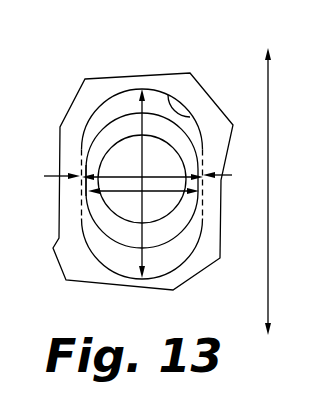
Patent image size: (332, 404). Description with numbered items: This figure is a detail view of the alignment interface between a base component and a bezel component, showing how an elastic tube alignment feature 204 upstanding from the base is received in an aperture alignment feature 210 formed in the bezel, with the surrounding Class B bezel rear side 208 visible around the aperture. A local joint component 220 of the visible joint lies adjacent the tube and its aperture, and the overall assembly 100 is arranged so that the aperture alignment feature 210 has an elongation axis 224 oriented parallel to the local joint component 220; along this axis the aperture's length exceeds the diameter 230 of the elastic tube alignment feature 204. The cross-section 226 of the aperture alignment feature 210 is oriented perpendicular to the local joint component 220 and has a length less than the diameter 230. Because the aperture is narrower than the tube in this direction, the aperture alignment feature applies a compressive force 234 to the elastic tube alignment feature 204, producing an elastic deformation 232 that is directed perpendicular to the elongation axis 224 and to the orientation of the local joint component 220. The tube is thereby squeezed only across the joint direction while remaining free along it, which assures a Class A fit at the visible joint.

The assembly 100 is at (92, 274).
The elastic tube alignment feature 204 is at (132, 111).
The bezel rear side 208 is at (110, 90).
The aperture alignment feature 210 is at (168, 95).
The local joint component 220 is at (266, 302).
The elongation axis 224 is at (138, 243).
The cross-section 226 is at (112, 188).
The diameter 230 is at (108, 160).
The elastic deformation 232 is at (80, 184).
The compressive force 234 is at (62, 176).